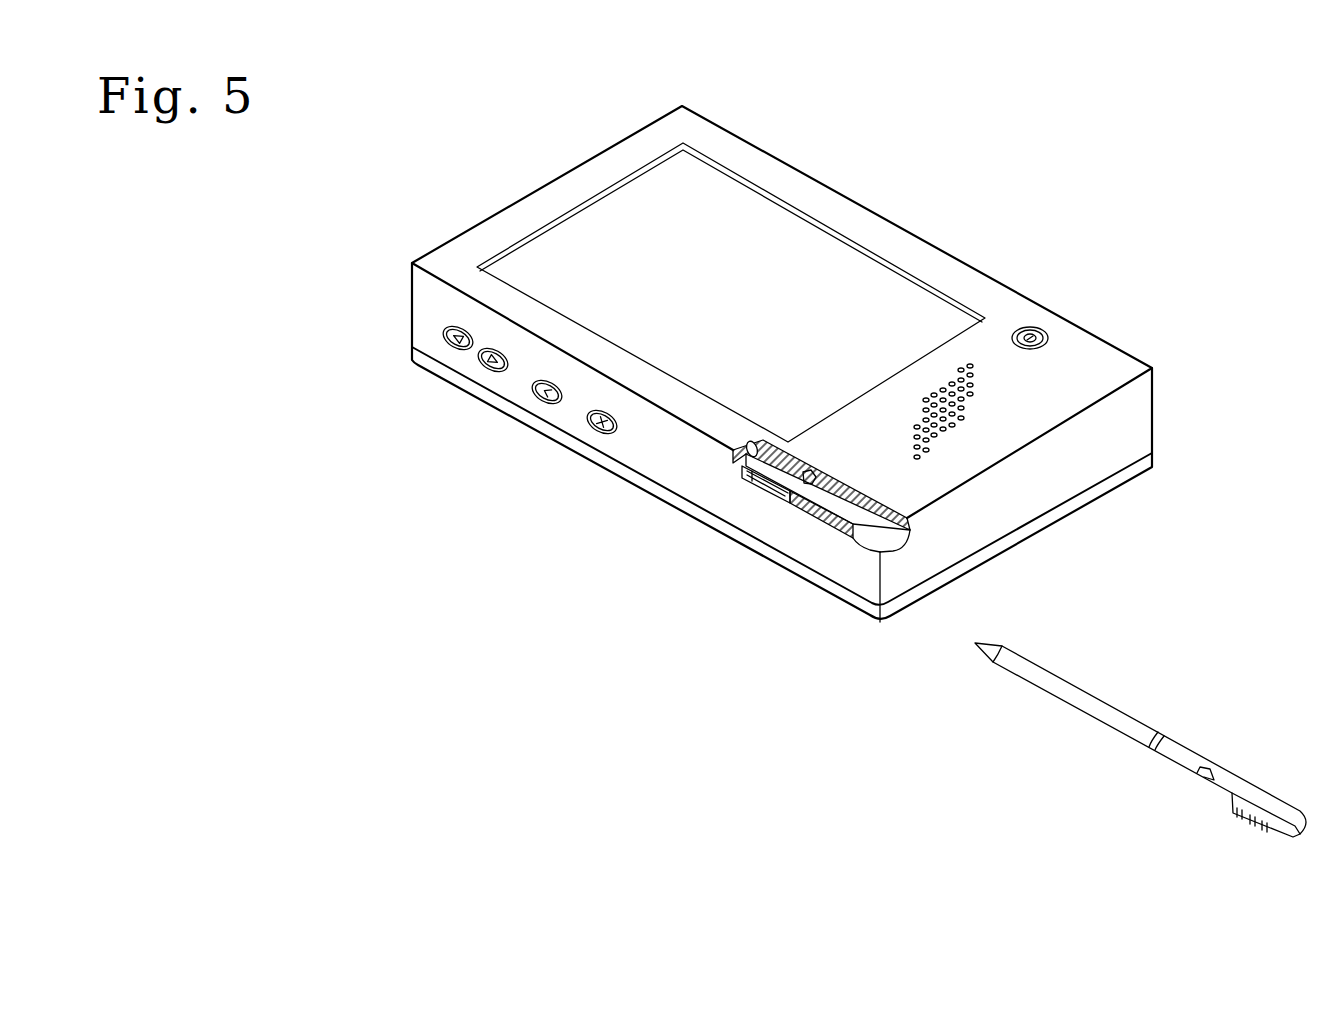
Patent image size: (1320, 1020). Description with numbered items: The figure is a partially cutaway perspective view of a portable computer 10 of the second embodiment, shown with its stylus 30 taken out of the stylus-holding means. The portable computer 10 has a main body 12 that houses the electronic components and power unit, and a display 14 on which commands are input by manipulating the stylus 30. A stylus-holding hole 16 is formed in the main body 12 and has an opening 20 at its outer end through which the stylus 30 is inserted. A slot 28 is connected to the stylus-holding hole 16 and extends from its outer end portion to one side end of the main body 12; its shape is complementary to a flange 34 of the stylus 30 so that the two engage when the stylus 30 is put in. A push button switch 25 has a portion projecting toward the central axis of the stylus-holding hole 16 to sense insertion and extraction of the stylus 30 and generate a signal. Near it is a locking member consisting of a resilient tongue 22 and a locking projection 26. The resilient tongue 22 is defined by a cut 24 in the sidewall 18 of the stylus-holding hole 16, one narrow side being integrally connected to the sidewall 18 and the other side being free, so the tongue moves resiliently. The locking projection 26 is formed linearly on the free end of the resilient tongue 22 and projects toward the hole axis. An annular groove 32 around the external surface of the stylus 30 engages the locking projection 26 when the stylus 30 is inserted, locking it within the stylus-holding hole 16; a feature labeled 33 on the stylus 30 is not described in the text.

The portable computer 10 is at (506, 131).
The main body 12 is at (1092, 355).
The display 14 is at (843, 260).
The stylus-holding hole 16 is at (840, 503).
The sidewall 18 is at (813, 504).
The opening 20 is at (903, 552).
The resilient tongue 22 is at (780, 496).
The cut 24 is at (755, 482).
The push button switch 25 is at (808, 472).
The locking projection 26 is at (766, 452).
The slot 28 is at (867, 541).
The stylus 30 is at (1065, 686).
The annular groove 32 is at (1160, 740).
The locking notch 33 is at (1205, 764).
The flange 34 is at (1240, 803).